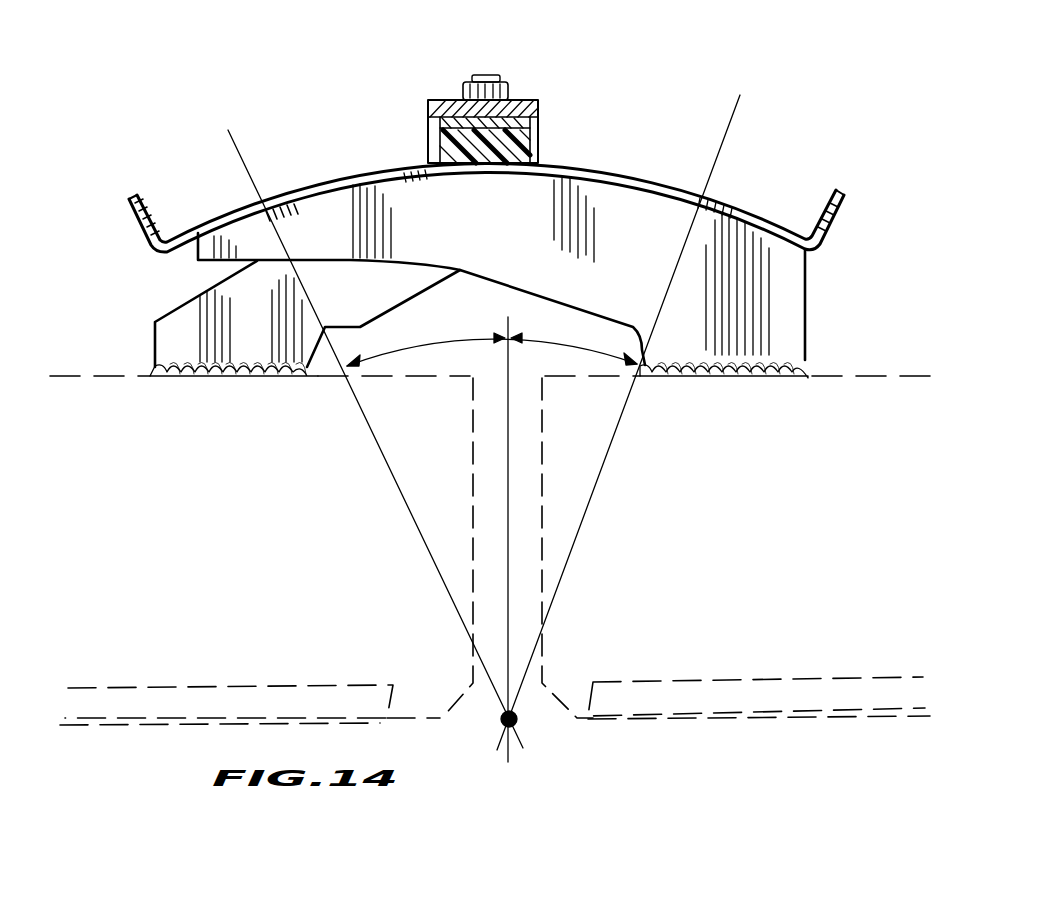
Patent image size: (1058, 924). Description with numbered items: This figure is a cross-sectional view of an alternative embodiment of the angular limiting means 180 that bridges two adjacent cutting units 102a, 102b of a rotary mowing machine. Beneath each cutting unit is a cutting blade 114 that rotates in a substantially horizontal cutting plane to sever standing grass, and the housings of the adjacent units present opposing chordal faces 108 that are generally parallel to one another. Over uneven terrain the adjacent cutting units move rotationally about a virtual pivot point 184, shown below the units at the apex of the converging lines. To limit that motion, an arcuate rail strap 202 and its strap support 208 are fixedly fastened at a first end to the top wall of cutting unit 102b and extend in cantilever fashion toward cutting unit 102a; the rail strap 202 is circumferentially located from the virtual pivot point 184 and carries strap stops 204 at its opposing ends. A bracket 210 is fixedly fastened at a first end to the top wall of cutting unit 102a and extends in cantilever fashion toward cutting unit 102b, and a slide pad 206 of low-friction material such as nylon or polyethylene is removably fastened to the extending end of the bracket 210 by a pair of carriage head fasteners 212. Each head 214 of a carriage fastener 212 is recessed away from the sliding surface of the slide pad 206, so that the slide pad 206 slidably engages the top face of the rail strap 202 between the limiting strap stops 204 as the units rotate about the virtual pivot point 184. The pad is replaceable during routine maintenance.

The angular limiting means 180 is at (336, 88).
The arcuate rail strap 202 is at (727, 202).
The strap stops 204 is at (142, 194).
The slide pad 206 is at (537, 134).
The strap support 208 is at (790, 270).
The bracket 210 is at (197, 313).
The carriage head fasteners 212 is at (512, 85).
The head 214 is at (527, 154).
The chordal faces 108 is at (470, 438).
The cutting unit 102a is at (243, 482).
The cutting unit 102b is at (784, 477).
The cutting blade 114 is at (200, 685).
The virtual pivot point 184 is at (518, 724).